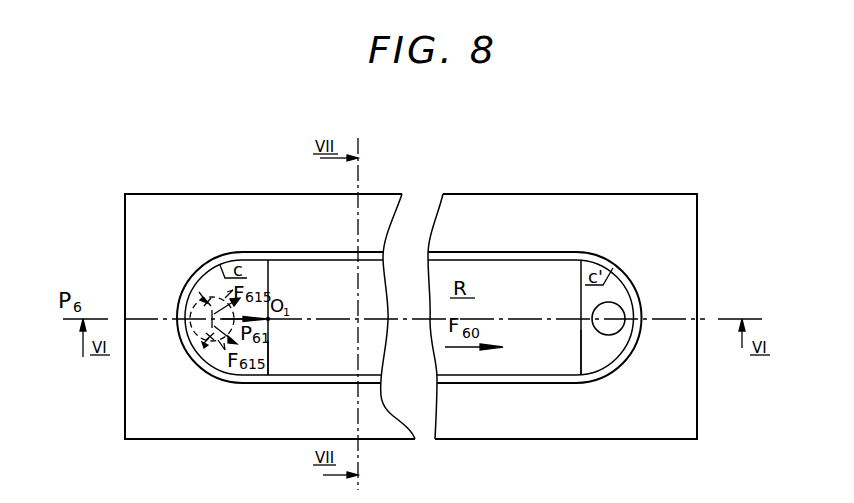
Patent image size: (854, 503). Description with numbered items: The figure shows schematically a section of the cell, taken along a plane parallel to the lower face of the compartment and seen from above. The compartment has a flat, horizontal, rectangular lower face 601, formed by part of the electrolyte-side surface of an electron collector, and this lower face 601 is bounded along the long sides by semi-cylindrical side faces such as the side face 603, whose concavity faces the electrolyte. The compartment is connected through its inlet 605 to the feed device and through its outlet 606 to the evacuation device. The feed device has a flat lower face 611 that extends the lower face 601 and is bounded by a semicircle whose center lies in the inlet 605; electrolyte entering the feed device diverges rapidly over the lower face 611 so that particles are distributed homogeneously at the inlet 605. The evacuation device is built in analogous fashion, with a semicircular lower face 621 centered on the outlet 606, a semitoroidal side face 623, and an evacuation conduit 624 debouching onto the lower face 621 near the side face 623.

The lower face 601 is at (478, 267).
The side face 603 is at (338, 257).
The inlet 605 is at (345, 285).
The outlet 606 is at (580, 296).
The lower face 611 is at (267, 361).
The lower face 621 is at (581, 338).
The side face 623 is at (690, 297).
The evacuation conduit 624 is at (617, 358).